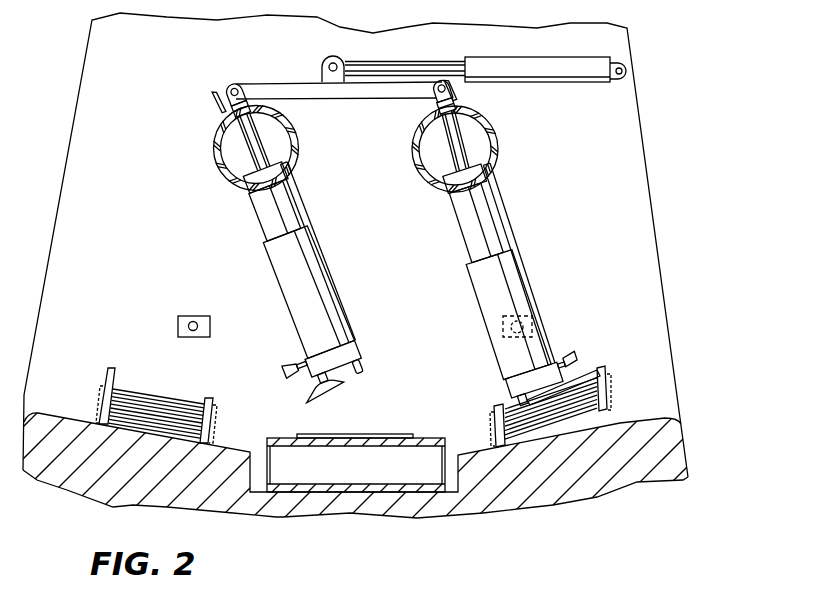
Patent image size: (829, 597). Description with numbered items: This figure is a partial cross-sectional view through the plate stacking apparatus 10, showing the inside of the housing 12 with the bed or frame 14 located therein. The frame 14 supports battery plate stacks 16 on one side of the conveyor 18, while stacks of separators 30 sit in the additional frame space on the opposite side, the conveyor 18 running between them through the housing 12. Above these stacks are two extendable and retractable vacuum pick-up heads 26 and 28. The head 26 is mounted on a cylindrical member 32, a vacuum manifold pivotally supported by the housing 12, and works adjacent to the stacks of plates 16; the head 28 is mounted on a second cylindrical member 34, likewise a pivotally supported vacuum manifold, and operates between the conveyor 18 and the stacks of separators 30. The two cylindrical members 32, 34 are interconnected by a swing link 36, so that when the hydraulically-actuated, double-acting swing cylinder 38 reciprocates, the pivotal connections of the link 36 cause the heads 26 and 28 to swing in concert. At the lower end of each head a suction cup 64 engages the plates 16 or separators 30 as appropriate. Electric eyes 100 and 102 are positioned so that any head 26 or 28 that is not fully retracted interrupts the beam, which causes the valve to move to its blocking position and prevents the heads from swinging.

The plate stacking apparatus 10 is at (657, 139).
The housing 12 is at (655, 213).
The bed or frame 14 is at (662, 417).
The battery plate stacks 16 is at (577, 428).
The conveyor 18 is at (370, 490).
The vacuum pick-up heads 26 is at (534, 237).
The vacuum pick-up heads 28 is at (272, 300).
The stacks of separators 30 is at (157, 420).
The cylindrical member 32 is at (496, 129).
The cylindrical member 34 is at (214, 151).
The swing link 36 is at (259, 90).
The swing cylinder 38 is at (564, 62).
The suction cup 64 is at (578, 378).
The electric eye 100 is at (178, 325).
The electric eye 102 is at (543, 318).